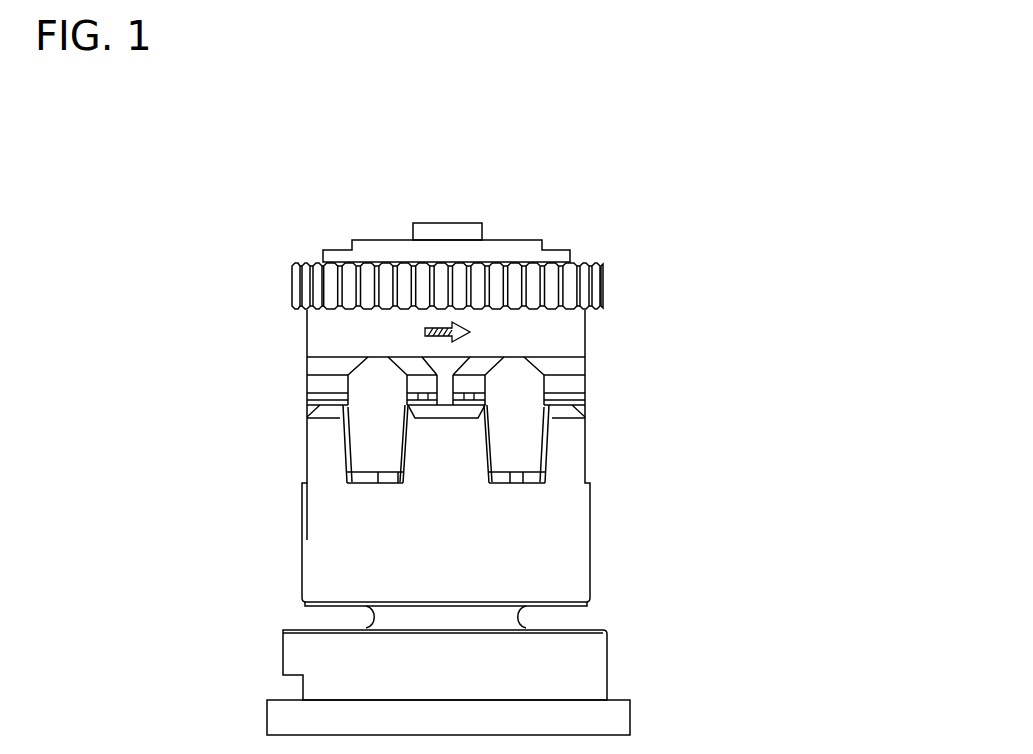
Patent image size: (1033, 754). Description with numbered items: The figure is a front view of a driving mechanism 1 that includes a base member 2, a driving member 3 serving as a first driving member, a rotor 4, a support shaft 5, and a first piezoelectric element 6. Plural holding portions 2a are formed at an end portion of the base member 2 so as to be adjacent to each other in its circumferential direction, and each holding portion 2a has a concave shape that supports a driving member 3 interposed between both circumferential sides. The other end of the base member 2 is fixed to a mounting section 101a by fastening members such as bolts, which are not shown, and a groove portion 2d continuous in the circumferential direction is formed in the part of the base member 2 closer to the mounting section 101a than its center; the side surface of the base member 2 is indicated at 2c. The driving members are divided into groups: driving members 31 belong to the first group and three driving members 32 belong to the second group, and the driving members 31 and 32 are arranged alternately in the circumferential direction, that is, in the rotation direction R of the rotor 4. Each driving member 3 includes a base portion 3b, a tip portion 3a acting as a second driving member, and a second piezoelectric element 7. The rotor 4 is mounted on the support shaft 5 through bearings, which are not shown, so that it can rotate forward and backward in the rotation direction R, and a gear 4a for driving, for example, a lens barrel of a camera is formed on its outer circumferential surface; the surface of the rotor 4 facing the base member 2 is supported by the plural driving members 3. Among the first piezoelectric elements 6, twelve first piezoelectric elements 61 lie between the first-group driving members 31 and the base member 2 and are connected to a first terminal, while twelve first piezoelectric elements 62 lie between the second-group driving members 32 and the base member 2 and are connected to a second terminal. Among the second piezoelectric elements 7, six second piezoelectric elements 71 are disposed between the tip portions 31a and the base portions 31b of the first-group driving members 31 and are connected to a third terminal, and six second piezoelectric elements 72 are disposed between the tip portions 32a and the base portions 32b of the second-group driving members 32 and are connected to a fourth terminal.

The driving mechanism 1 is at (653, 250).
The base member 2 is at (434, 505).
The holding portion 2a is at (360, 474).
The side surface of base 2c is at (301, 550).
The groove portion 2d is at (296, 616).
The driving member 3 is at (449, 348).
The driving member of the first group 31 is at (145, 293).
The driving member of the second group 32 is at (752, 278).
The tip portion 3a is at (446, 333).
The tip portion of first-group driving member 31a is at (378, 372).
The tip portion of second-group driving member 32a is at (523, 372).
The base portion 3b is at (446, 371).
The base portion of first-group driving member 31b is at (375, 410).
The base portion of second-group driving member 32b is at (518, 412).
The rotor 4 is at (388, 245).
The gear 4a is at (290, 287).
The support shaft 5 is at (463, 218).
The first piezoelectric element 6 is at (449, 444).
The first piezoelectric element of first group 61 is at (348, 430).
The first piezoelectric element of second group 62 is at (545, 450).
The second piezoelectric element 7 is at (446, 394).
The second piezoelectric element of first group 71 is at (357, 396).
The second piezoelectric element of second group 72 is at (535, 398).
The mounting section 101a is at (618, 722).